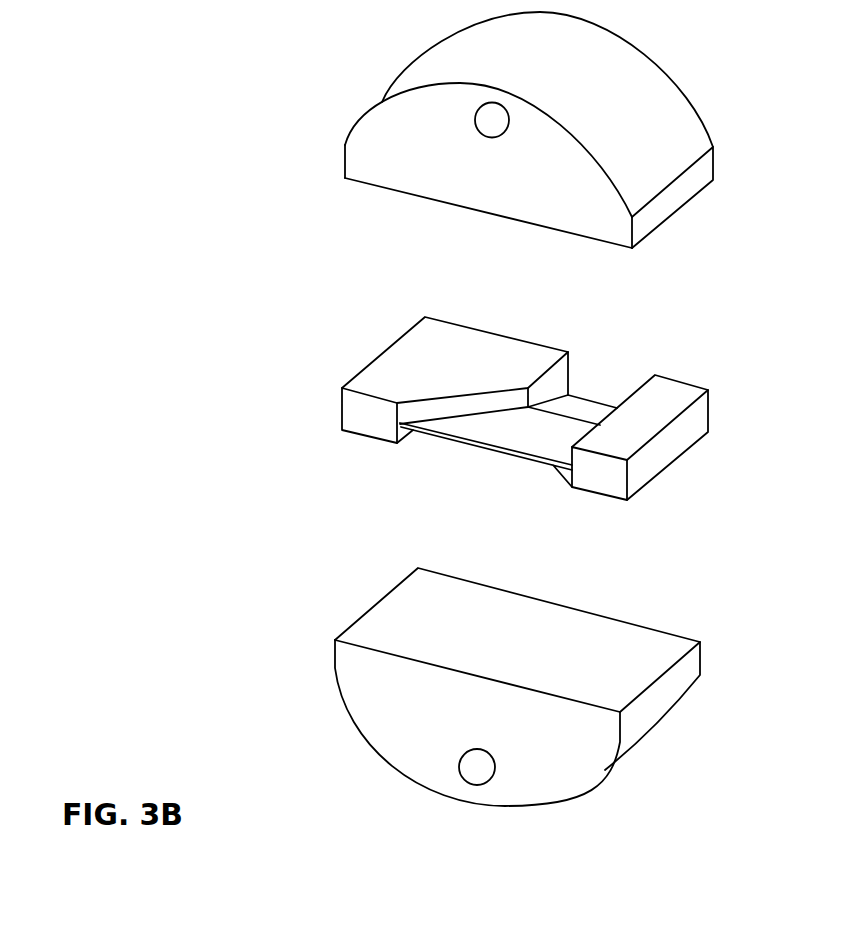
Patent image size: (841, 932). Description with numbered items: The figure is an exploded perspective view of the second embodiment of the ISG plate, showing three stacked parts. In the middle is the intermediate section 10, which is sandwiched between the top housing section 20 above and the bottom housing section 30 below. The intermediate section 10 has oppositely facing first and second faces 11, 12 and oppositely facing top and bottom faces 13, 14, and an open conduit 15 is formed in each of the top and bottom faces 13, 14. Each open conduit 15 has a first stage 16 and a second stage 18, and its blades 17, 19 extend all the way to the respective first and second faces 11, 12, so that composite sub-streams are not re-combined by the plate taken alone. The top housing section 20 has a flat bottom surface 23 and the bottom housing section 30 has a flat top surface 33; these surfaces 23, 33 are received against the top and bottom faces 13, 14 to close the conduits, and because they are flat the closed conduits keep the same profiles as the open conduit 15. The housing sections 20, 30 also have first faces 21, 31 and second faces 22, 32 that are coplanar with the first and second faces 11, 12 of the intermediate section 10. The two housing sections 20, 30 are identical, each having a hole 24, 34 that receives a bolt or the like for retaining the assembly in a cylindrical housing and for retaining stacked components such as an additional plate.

The intermediate section 10 is at (337, 362).
The first face 11 is at (357, 413).
The second face 12 is at (468, 325).
The top face 13 is at (493, 352).
The bottom face 14 is at (387, 442).
The open conduit 15 is at (635, 334).
The first stage 16 is at (532, 433).
The blade 17 is at (528, 457).
The second stage 18 is at (588, 406).
The blade 19 is at (573, 378).
The top housing section 20 is at (323, 135).
The first face 21 is at (368, 163).
The second face 22 is at (643, 54).
The bottom surface 23 is at (393, 190).
The hole 24 is at (492, 138).
The bottom housing section 30 is at (321, 712).
The first face 31 is at (393, 723).
The second face 32 is at (555, 600).
The top surface 33 is at (373, 627).
The hole 34 is at (468, 770).